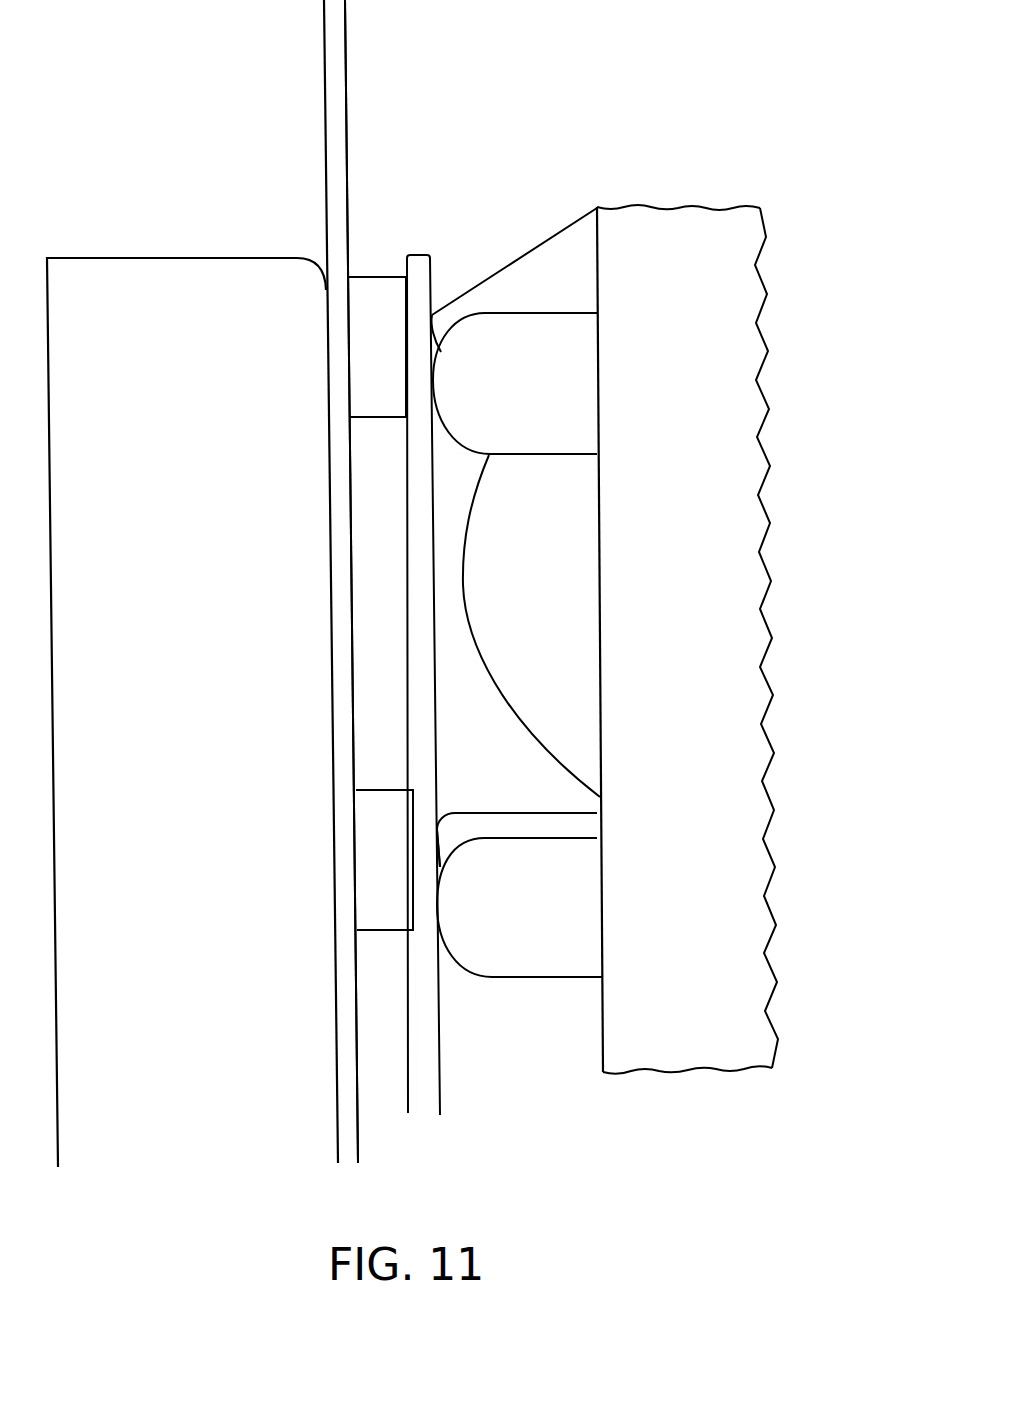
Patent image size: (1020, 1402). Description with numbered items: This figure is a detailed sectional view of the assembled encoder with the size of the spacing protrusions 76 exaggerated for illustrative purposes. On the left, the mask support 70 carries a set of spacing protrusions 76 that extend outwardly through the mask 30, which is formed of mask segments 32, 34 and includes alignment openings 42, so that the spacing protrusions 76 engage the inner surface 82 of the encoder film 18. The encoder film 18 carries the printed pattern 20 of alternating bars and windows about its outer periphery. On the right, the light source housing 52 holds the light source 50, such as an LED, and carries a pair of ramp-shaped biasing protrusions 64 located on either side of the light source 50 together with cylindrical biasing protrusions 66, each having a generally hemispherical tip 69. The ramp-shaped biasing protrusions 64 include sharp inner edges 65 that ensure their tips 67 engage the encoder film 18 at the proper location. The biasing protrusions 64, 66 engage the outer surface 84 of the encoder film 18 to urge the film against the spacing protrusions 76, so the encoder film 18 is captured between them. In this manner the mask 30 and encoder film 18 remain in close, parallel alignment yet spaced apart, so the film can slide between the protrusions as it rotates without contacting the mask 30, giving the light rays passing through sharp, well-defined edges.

The encoder film 18 is at (409, 478).
The printed pattern 20 is at (409, 578).
The mask 30 is at (414, 740).
The mask segment 32 is at (334, 700).
The mask segment 34 is at (351, 581).
The alignment openings 42 is at (341, 326).
The light source 50 is at (531, 626).
The light source housing 52 is at (673, 216).
The ramp-shaped biasing protrusions 64 is at (601, 826).
The sharp inner edges 65 is at (528, 812).
The cylindrical biasing protrusions 66 is at (518, 645).
The tips 67 is at (431, 316).
The hemispherical tip 69 is at (458, 440).
The mask support 70 is at (207, 262).
The spacing protrusions 76 is at (381, 603).
The inner surface 82 is at (410, 632).
The outer surface 84 is at (436, 718).